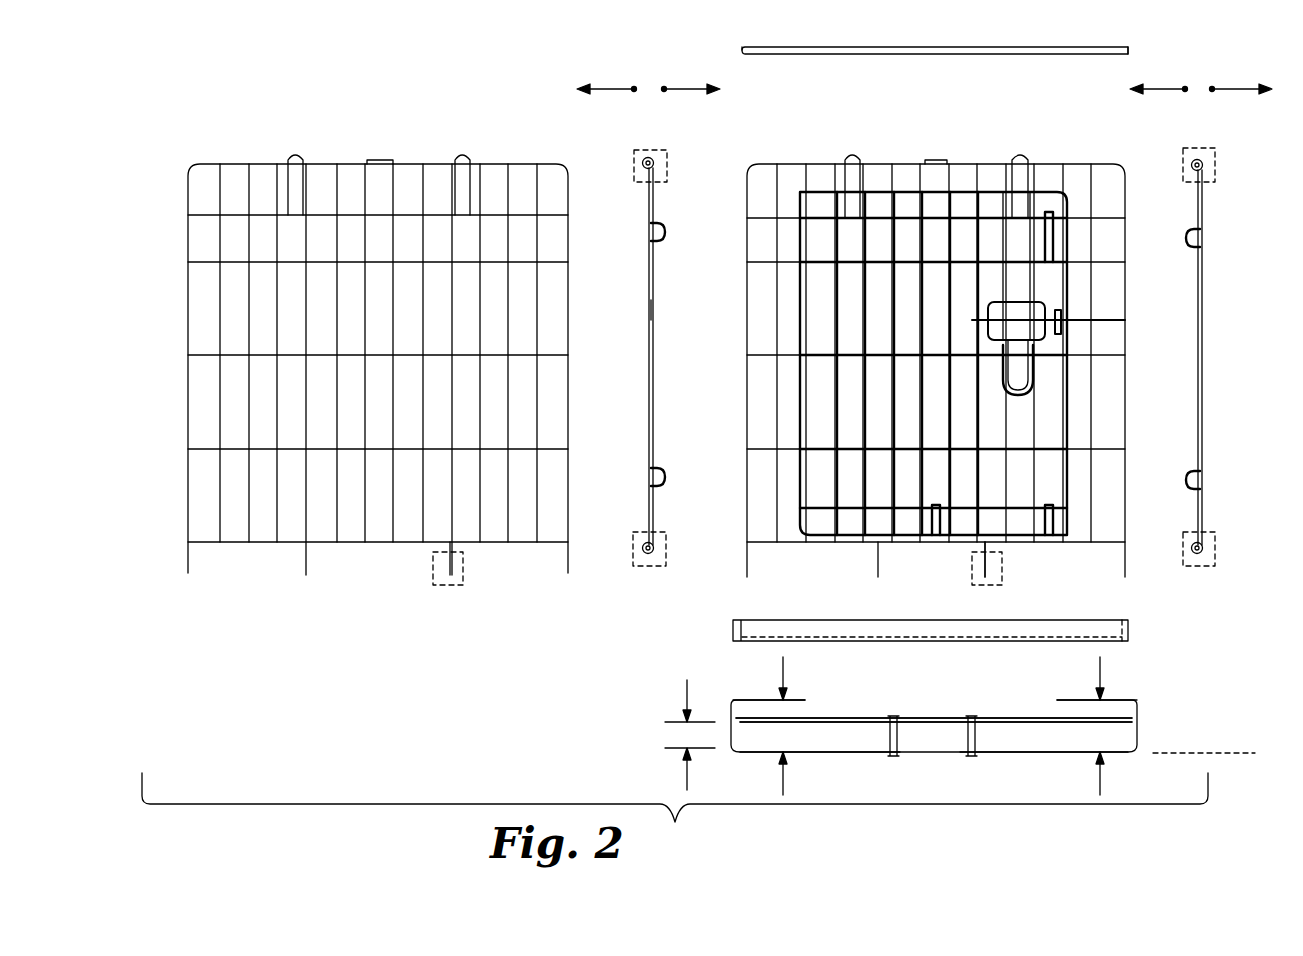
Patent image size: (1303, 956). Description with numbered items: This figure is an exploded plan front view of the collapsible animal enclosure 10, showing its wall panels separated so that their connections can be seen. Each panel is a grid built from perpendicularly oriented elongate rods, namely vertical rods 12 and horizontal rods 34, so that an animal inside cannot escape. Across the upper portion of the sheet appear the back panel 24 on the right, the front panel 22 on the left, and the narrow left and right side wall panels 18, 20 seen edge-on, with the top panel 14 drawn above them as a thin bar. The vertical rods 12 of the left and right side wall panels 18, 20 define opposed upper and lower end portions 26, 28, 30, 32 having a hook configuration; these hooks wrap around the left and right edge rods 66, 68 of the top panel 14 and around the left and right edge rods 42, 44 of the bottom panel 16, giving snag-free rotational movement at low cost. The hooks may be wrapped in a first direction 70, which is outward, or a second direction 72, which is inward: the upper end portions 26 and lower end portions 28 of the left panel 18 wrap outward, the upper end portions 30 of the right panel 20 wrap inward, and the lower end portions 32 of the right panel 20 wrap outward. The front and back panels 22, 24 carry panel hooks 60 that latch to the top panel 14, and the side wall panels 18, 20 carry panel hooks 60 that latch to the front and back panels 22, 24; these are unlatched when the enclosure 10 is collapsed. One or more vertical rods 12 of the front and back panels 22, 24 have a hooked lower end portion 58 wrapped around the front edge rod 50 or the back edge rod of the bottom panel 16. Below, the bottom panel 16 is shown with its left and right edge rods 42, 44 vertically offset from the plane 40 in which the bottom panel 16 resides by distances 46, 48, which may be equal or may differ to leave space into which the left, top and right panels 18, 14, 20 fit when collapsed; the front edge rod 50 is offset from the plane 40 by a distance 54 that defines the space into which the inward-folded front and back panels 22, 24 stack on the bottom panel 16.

The animal enclosure 10 is at (675, 814).
The rods 12 is at (186, 306).
The top panel 14 is at (907, 37).
The bottom panel 16 is at (882, 707).
The left side wall panel 18 is at (929, 344).
The right side wall panel 20 is at (1223, 346).
The front panel 22 is at (570, 152).
The back panel 24 is at (748, 152).
The upper end portions 26 is at (668, 165).
The lower end portions 28 is at (668, 548).
The upper end portions 30 is at (1216, 165).
The lower end portions 32 is at (1216, 552).
The horizontal rods 34 is at (648, 222).
The plane 40 is at (1212, 756).
The left edge rod 42 is at (738, 700).
The right edge rod 44 is at (1134, 700).
The distance 46 is at (786, 778).
The distance 48 is at (1103, 778).
The front edge rod 50 is at (828, 716).
The distance 54 is at (687, 690).
The lower end portion 58 is at (465, 568).
The panel hooks 60 is at (667, 228).
The left edge rod 66 is at (745, 46).
The right edge rod 68 is at (1124, 46).
The first direction 70 is at (613, 88).
The second direction 72 is at (690, 88).